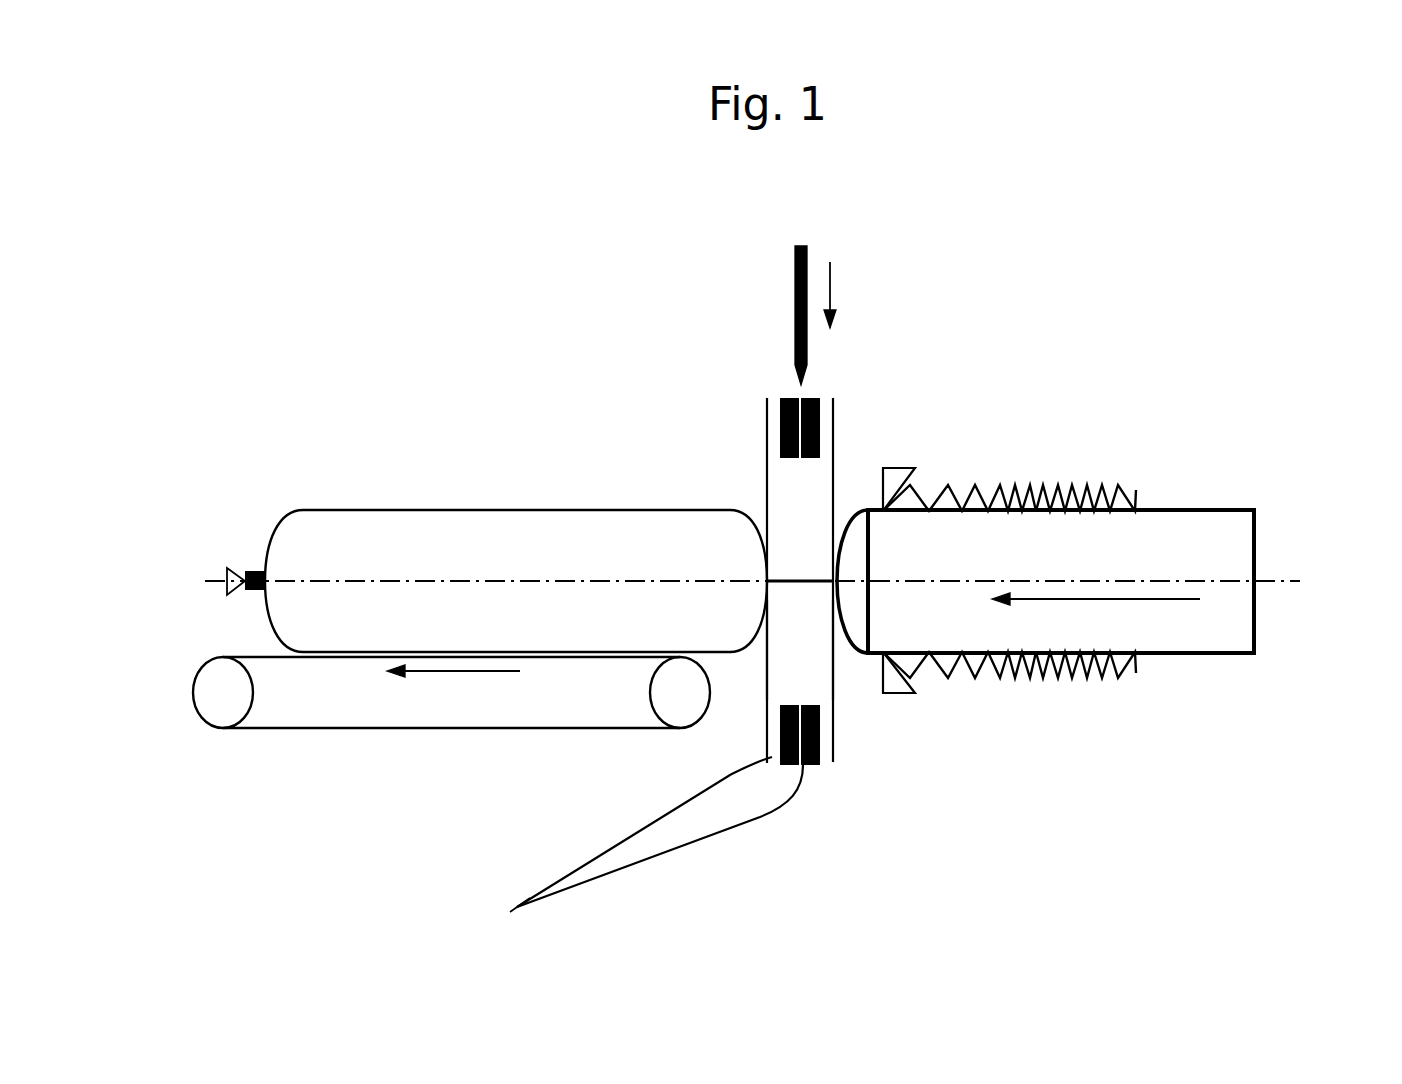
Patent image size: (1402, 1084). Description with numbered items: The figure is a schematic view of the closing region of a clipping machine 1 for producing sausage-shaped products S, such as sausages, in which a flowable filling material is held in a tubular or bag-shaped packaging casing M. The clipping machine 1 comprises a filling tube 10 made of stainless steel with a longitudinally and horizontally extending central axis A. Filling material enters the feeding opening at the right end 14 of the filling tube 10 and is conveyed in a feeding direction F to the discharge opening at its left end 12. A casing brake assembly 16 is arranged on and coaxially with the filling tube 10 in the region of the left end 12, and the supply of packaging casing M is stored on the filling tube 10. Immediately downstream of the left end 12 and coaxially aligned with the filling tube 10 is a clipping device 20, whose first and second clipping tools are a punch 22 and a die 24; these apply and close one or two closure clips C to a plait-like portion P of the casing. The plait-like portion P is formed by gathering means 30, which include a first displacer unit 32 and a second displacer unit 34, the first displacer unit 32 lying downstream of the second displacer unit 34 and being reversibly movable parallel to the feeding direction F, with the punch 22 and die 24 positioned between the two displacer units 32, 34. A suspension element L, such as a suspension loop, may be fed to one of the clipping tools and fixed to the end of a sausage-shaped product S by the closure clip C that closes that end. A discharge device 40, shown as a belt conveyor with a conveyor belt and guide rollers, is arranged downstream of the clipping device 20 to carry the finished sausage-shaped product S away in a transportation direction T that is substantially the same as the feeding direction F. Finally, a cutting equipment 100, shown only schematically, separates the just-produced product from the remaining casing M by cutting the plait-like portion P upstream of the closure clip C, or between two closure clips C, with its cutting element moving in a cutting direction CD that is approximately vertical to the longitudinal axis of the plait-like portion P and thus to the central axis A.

The clipping machine 1 is at (991, 330).
The cutting equipment 100 is at (766, 279).
The filling tube 10 is at (1178, 510).
The left end 12 is at (872, 612).
The right end 14 is at (1257, 542).
The casing brake assembly 16 is at (917, 468).
The clipping device 20 is at (680, 440).
The punch 22 is at (818, 430).
The die 24 is at (778, 735).
The gathering means 30 is at (936, 825).
The first displacer unit 32 is at (836, 676).
The second displacer unit 34 is at (768, 645).
The discharge device 40 is at (477, 760).
The central axis A is at (1300, 583).
The closure clip C is at (245, 577).
The cutting direction CD is at (854, 295).
The feeding direction F is at (1096, 616).
The suspension element L is at (730, 830).
The packaging casing M is at (1088, 488).
The plait-like portion P is at (798, 578).
The sausage-shaped product S is at (498, 508).
The transportation direction T is at (453, 686).